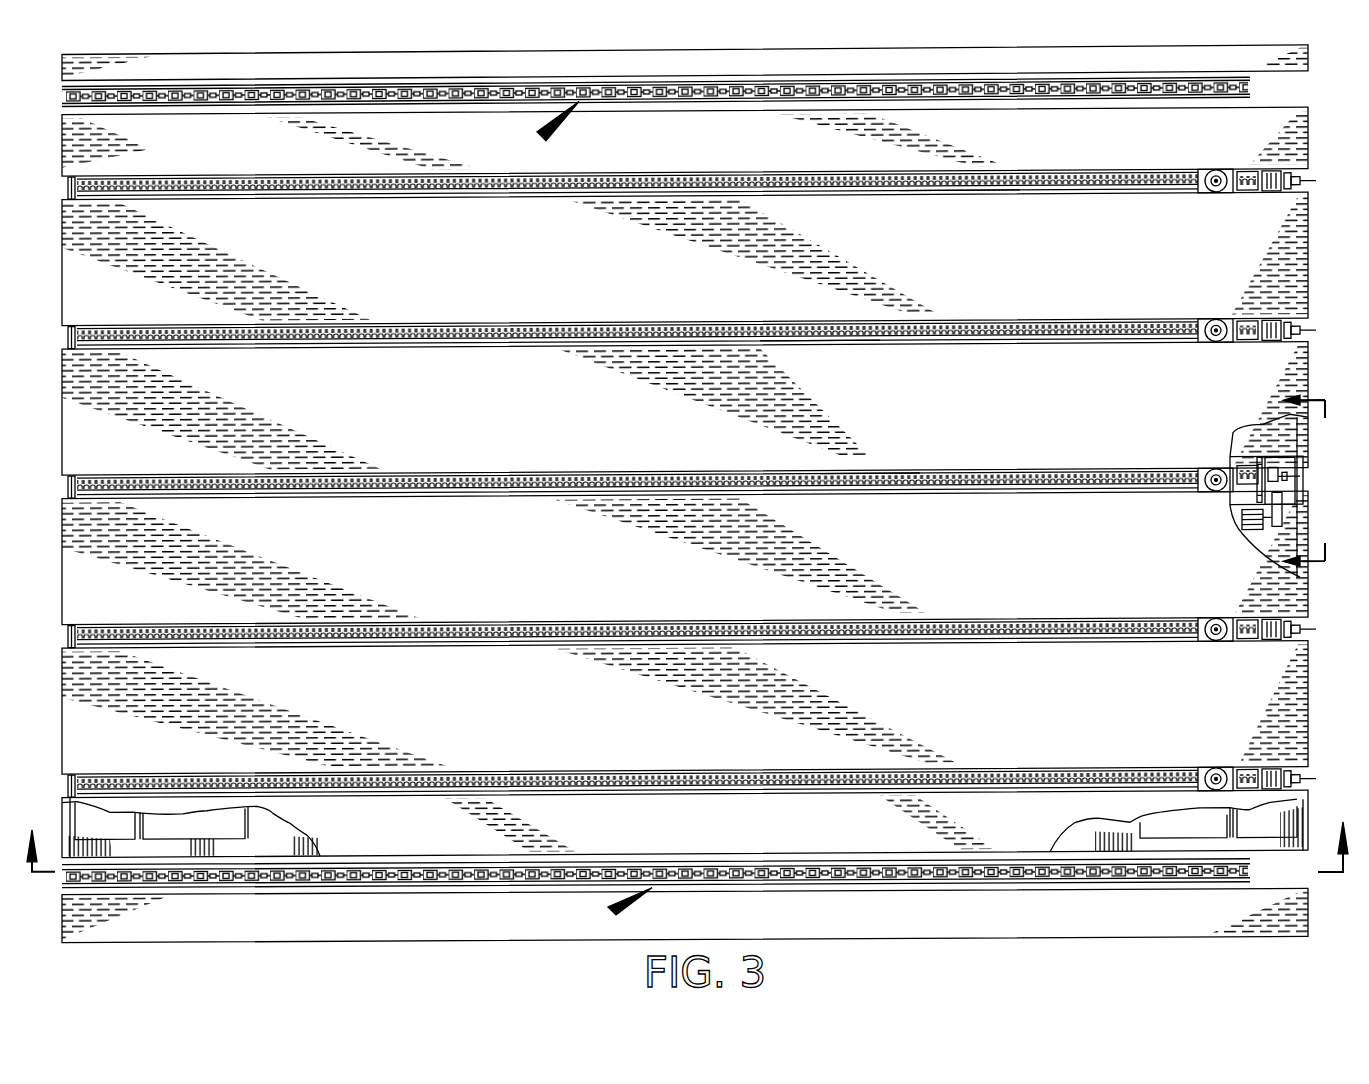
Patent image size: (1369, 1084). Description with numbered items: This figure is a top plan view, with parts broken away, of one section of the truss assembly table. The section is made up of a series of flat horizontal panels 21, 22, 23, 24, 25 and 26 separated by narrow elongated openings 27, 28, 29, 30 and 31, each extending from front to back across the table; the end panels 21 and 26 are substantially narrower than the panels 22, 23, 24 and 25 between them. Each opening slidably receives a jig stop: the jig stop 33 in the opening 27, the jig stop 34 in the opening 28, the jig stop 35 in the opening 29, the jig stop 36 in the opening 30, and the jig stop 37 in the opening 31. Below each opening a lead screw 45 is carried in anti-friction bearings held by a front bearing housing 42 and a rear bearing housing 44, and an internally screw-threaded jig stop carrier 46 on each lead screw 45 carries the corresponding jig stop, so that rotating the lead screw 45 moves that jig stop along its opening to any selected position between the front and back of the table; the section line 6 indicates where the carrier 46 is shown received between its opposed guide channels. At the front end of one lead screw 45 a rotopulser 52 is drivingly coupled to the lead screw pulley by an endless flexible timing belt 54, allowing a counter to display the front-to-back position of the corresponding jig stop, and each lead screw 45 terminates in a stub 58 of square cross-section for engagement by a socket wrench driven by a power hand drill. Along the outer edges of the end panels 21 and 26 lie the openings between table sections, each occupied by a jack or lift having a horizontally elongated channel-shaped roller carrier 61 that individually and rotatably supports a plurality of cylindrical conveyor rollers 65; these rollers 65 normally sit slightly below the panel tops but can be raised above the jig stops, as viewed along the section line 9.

The section line 6- 6 is at (1315, 483).
The section line 9- 9 is at (688, 867).
The flat horizontal panel 21 is at (692, 835).
The flat horizontal panel 22 is at (692, 725).
The flat horizontal panel 23 is at (692, 576).
The flat horizontal panel 24 is at (692, 432).
The flat horizontal panel 25 is at (692, 280).
The flat horizontal panel 26 is at (690, 154).
The elongated opening 27 is at (1304, 791).
The elongated opening 28 is at (1303, 637).
The elongated opening 29 is at (869, 481).
The elongated opening 30 is at (816, 348).
The elongated opening 31 is at (962, 200).
The jig stop 33 is at (1218, 775).
The jig stop 34 is at (1215, 626).
The jig stop 35 is at (1213, 474).
The jig stop 36 is at (1214, 327).
The jig stop 37 is at (1214, 177).
The bearing housing 42 is at (1258, 328).
The bearing housing 44 is at (76, 179).
The lead screw 45 is at (987, 179).
The jig stop carrier 46 is at (1203, 779).
The rotopulser 52 is at (1244, 528).
The timing belt 54 is at (1284, 504).
The stub 58 is at (1303, 190).
The roller carrier 61 is at (541, 140).
The conveyor roller 65 is at (645, 91).